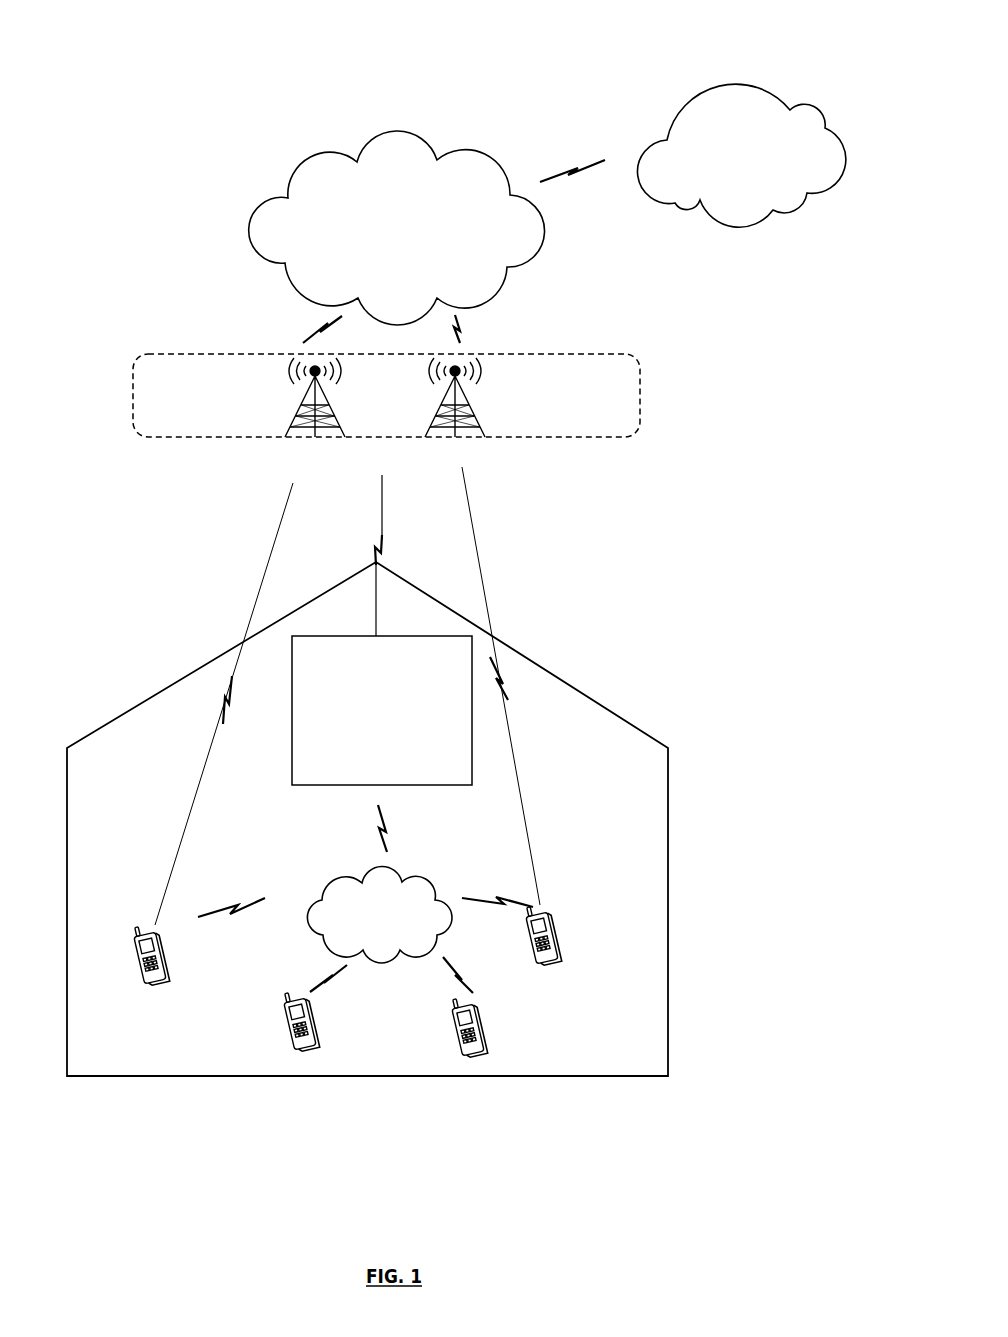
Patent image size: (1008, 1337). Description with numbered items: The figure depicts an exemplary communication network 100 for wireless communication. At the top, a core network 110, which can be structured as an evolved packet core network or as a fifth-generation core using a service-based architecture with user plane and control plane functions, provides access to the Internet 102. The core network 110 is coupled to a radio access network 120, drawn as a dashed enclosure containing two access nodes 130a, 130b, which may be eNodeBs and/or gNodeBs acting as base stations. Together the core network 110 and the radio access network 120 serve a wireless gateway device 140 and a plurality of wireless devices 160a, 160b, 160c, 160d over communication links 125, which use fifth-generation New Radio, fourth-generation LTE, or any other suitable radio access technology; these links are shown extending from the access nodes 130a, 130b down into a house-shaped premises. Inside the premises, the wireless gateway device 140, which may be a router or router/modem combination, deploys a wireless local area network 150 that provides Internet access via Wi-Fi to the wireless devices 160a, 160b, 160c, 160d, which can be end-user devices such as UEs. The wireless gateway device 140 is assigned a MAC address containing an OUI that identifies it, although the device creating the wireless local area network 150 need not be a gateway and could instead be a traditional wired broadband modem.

The communication network 100 is at (632, 38).
The Internet 102 is at (741, 155).
The core network 110 is at (397, 228).
The radio access network 120 is at (638, 353).
The communication links 125 is at (273, 545).
The access node 130a is at (263, 398).
The access node 130b is at (500, 393).
The wireless gateway device 140 is at (382, 710).
The wireless local area network 150 is at (379, 914).
The wireless device 160a is at (133, 912).
The wireless device 160b is at (307, 985).
The wireless device 160c is at (480, 1013).
The wireless device 160d is at (582, 918).